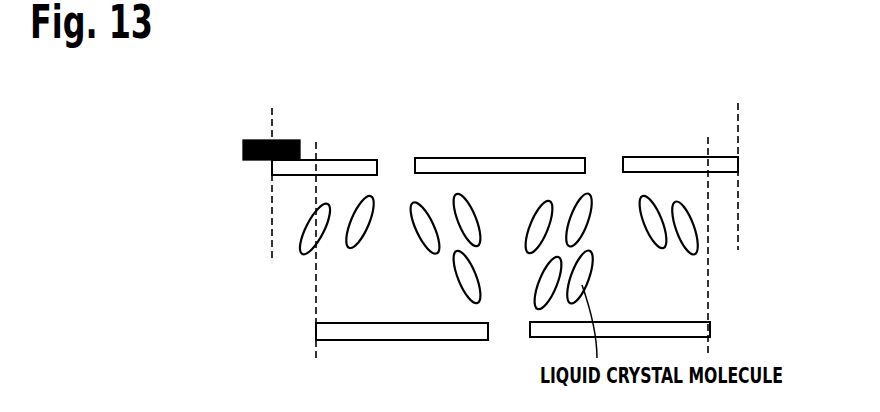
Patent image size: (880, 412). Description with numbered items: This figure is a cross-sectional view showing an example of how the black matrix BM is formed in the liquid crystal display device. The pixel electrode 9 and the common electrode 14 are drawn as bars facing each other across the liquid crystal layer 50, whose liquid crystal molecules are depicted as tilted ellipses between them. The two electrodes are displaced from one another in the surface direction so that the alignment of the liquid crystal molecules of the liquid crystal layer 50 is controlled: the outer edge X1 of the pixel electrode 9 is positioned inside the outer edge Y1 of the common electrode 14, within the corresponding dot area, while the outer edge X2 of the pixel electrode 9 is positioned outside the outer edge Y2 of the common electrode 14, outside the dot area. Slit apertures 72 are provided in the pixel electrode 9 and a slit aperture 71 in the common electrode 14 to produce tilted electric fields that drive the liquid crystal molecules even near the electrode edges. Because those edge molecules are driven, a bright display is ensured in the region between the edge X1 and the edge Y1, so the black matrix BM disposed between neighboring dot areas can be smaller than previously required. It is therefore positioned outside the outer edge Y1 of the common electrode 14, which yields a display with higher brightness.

The pixel electrode 9 is at (542, 133).
The common electrode 14 is at (556, 206).
The liquid crystal layer 50 is at (743, 242).
The slit aperture 71 is at (531, 336).
The slit aperture 72 is at (415, 167).
The black matrix BM is at (243, 149).
The outer edge of the pixel electrode X1 is at (270, 92).
The outer edge of the pixel electrode X2 is at (737, 89).
The outer edge of the common electrode Y1 is at (310, 122).
The outer edge of the common electrode Y2 is at (707, 121).